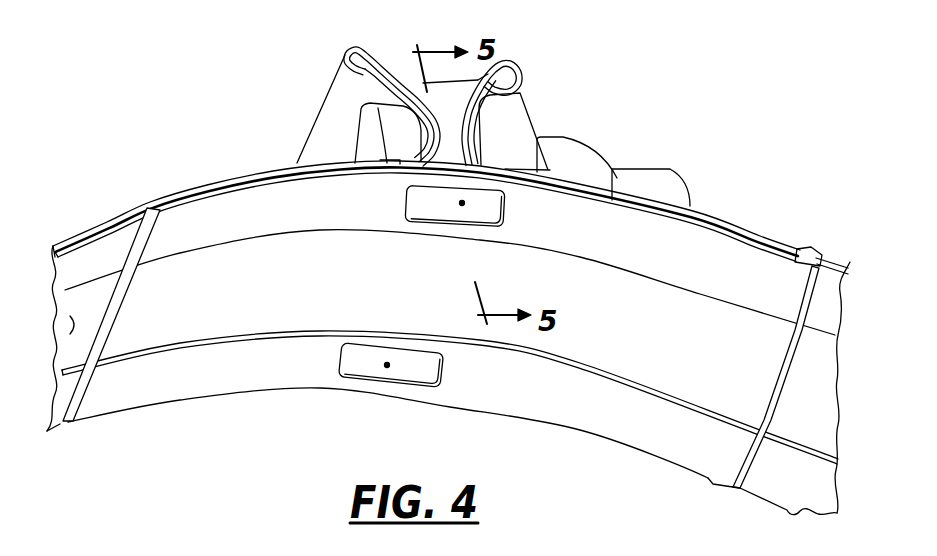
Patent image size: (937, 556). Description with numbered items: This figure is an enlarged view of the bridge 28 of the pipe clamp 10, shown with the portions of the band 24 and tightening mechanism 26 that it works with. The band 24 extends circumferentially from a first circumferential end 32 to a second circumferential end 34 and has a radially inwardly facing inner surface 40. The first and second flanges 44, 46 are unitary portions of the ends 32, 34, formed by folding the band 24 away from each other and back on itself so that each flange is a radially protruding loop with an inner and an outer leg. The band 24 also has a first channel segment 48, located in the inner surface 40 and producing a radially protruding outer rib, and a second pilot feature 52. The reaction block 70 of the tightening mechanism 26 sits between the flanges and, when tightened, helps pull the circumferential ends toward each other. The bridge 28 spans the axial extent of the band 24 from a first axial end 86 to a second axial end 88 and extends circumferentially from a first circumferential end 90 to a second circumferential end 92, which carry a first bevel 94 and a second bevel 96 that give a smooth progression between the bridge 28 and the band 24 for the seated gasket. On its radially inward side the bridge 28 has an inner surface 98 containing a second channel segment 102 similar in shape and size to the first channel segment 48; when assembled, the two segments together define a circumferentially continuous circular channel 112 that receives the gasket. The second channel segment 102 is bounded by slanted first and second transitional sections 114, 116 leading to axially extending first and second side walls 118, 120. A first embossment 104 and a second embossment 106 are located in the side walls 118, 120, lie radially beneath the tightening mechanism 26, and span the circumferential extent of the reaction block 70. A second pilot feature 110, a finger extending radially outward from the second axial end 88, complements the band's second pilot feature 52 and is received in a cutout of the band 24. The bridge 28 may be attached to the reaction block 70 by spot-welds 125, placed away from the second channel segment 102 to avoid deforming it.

The pipe clamp 10 is at (597, 118).
The band 24 is at (104, 198).
The tightening mechanism 26 is at (541, 112).
The bridge 28 is at (480, 425).
The first circumferential end 32 is at (567, 178).
The second circumferential end 34 is at (360, 163).
The inner surface 40 is at (90, 254).
The first flange 44 is at (506, 61).
The second flange 46 is at (353, 53).
The first channel segment 48 is at (78, 320).
The second pilot feature 52 is at (772, 243).
The reaction block 70 is at (420, 80).
The first axial end 86 is at (624, 447).
The second axial end 88 is at (758, 232).
The first circumferential end 90 is at (783, 376).
The second circumferential end 92 is at (80, 348).
The first bevel 94 is at (773, 406).
The second bevel 96 is at (103, 305).
The inner surface 98 is at (143, 327).
The second channel segment 102 is at (622, 356).
The first embossment 104 is at (407, 367).
The second embossment 106 is at (428, 201).
The second pilot feature 110 is at (812, 245).
The circumferentially continuous circular channel 112 is at (816, 355).
The first transitional section 114 is at (672, 394).
The second transitional section 116 is at (672, 282).
The first side wall 118 is at (698, 444).
The second side wall 120 is at (682, 235).
The spot-welds 125 is at (462, 203).